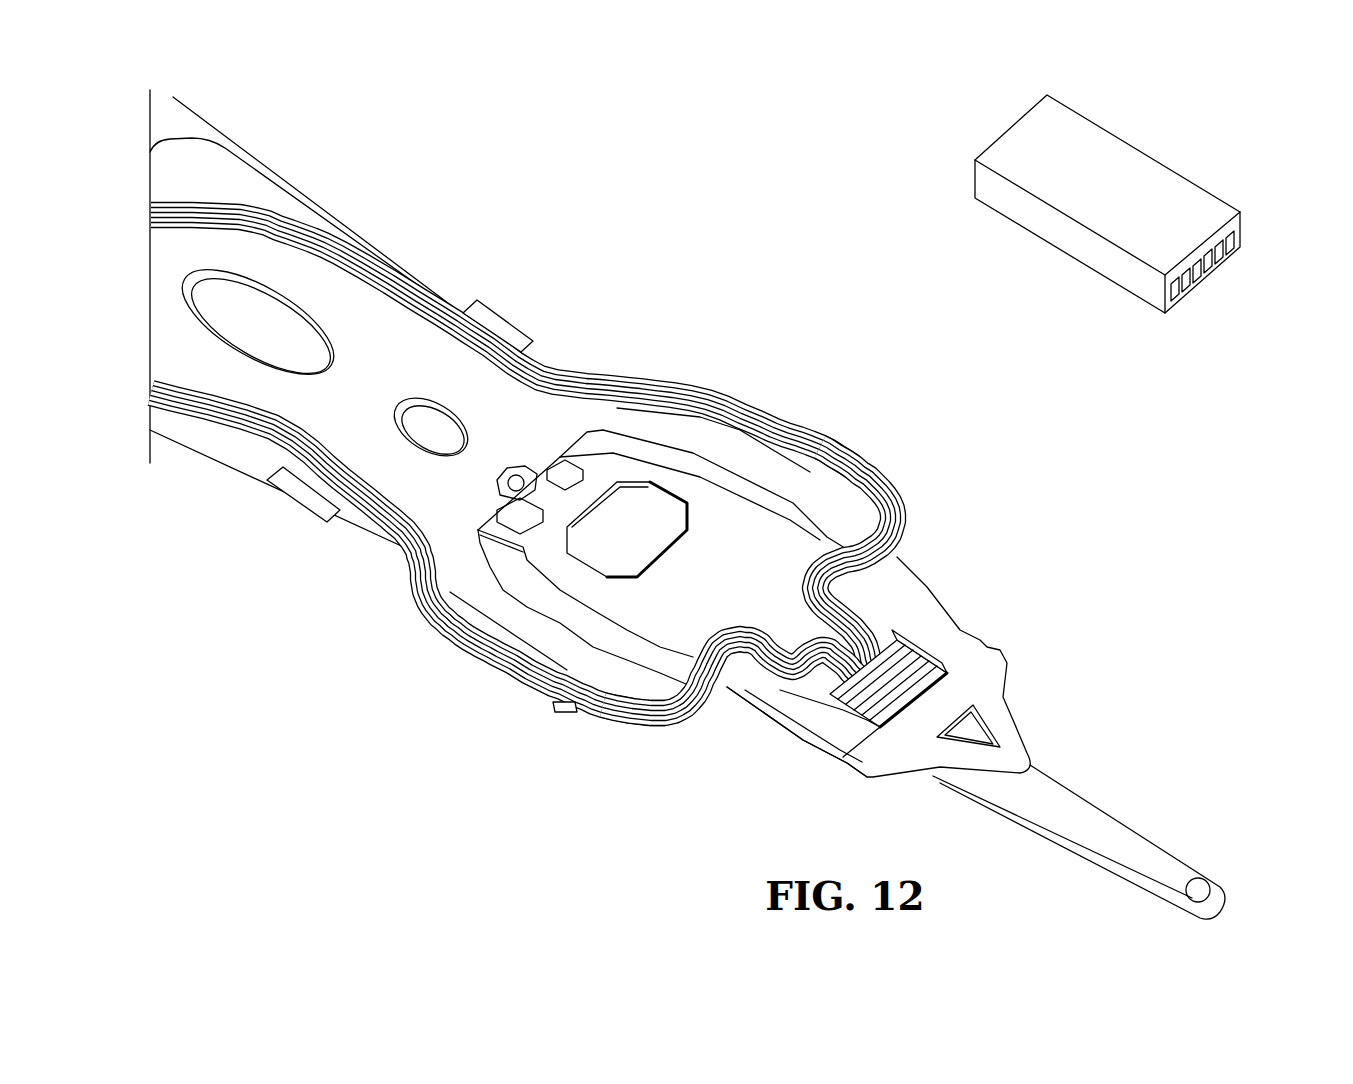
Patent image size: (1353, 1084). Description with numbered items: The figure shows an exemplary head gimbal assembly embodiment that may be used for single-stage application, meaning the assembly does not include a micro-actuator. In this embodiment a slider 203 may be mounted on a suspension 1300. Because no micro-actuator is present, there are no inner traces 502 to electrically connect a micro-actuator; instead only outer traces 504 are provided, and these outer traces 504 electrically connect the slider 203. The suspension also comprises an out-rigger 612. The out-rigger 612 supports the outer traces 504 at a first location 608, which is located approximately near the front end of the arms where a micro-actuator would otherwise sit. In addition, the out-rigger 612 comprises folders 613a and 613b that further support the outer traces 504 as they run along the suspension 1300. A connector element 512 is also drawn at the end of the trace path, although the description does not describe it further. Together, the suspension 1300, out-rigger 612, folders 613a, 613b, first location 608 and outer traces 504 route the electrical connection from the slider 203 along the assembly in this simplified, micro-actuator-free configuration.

The suspension 1300 is at (507, 415).
The inner traces 502 is at (827, 480).
The folder 613b is at (833, 447).
The first location 608 is at (897, 557).
The folder 613a is at (560, 710).
The outer traces 504 is at (697, 723).
The out-rigger 612 is at (813, 750).
The connector 512 is at (880, 727).
The slider 203 is at (1117, 137).